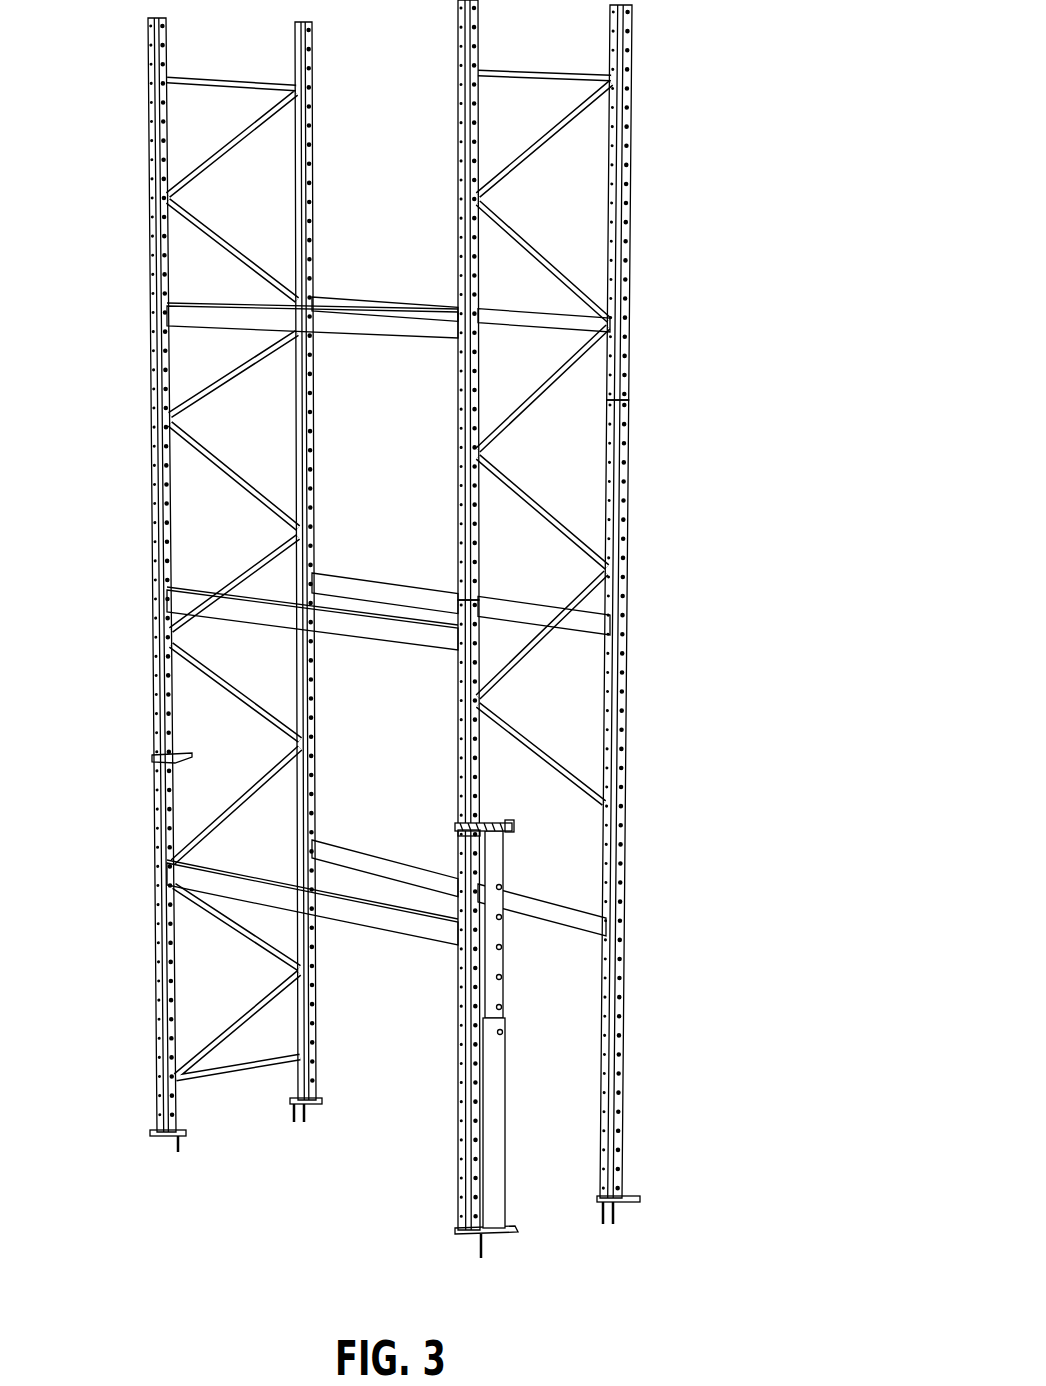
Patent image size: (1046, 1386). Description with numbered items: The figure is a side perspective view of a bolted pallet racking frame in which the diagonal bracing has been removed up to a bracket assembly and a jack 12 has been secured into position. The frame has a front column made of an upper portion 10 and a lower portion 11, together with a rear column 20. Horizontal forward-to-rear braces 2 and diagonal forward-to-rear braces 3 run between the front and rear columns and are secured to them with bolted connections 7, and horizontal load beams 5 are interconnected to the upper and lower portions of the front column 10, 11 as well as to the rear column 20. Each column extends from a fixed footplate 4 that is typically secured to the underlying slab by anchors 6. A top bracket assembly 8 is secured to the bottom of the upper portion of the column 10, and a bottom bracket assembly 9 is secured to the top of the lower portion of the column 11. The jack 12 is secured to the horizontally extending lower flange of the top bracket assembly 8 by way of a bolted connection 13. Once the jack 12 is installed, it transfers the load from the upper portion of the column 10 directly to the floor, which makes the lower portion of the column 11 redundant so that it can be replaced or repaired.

The horizontal forward-to-rear brace 2 is at (516, 106).
The diagonal forward-to-rear brace 3 is at (591, 148).
The footplate 4 is at (652, 1220).
The horizontal load beam 5 is at (402, 821).
The anchor 6 is at (440, 1245).
The bolted connection 7 is at (671, 577).
The top bracket assembly 8 is at (537, 804).
The bottom bracket assembly 9 is at (497, 849).
The upper portion of front column 10 is at (431, 43).
The lower portion of front column 11 is at (425, 1144).
The jack 12 is at (537, 993).
The bolted connection 13 is at (495, 790).
The rear column 20 is at (664, 21).